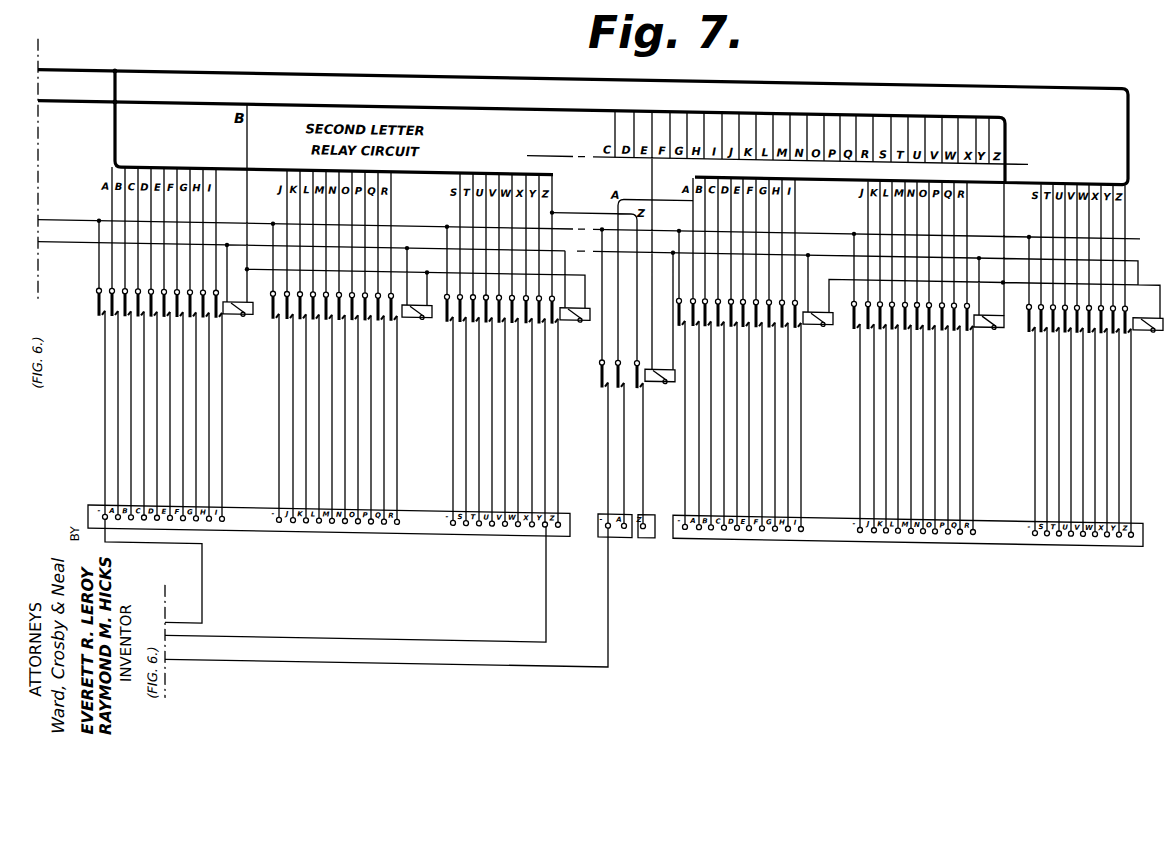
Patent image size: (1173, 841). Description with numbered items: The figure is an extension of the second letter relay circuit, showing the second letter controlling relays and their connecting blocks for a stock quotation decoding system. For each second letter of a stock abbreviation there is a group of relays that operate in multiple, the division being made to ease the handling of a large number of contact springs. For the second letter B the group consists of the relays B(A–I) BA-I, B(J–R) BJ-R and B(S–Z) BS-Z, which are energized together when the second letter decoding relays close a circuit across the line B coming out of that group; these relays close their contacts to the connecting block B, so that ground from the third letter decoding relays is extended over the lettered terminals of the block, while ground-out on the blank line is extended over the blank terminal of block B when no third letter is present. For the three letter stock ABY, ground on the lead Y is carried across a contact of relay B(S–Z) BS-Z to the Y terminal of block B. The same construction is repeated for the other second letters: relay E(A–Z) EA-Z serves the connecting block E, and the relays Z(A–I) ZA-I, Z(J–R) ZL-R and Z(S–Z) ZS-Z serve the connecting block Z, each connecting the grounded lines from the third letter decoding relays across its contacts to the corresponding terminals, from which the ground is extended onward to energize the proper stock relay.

The second letter controlling relay B (A–I) BA-I is at (239, 317).
The second letter controlling relay B (J–R) BJ-R is at (417, 320).
The second letter controlling relay B (S–Z) BS-Z is at (576, 324).
The second letter controlling relay E (A–Z) EA-Z is at (662, 386).
The second letter controlling relay Z (A–I) ZA-I is at (818, 328).
The second letter controlling relay Z (J–R) ZL-R is at (990, 332).
The second letter controlling relay Z (S–Z) ZS-Z is at (1149, 336).
The connecting block B is at (322, 510).
The connecting block E is at (620, 515).
The connecting block Z is at (901, 520).